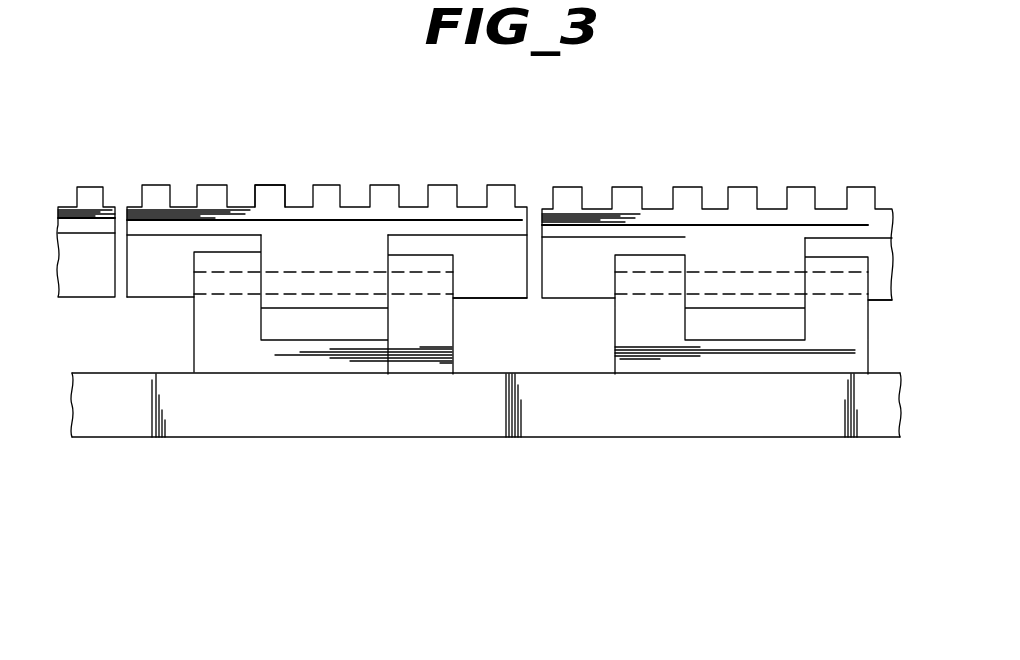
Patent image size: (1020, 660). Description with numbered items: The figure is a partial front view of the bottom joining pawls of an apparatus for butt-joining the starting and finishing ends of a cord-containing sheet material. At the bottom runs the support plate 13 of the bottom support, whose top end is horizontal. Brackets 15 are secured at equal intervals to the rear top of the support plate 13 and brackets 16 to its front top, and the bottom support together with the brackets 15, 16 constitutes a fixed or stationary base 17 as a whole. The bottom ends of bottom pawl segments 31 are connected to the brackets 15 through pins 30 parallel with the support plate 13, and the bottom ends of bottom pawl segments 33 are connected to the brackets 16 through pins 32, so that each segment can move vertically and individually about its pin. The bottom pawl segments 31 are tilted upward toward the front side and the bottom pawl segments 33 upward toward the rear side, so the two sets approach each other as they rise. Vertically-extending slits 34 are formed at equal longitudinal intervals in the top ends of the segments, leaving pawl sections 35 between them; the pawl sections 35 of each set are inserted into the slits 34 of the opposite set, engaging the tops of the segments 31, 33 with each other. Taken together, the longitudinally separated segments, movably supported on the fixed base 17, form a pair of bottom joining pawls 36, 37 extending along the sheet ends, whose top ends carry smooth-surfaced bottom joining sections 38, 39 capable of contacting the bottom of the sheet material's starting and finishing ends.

The support plate 13 is at (486, 436).
The fixed base 17 is at (640, 440).
The brackets 15 is at (464, 347).
The brackets 16 is at (230, 349).
The pins 30 is at (543, 304).
The pins 32 is at (375, 300).
The bottom pawl segments 31 is at (327, 178).
The bottom pawl segments 33 is at (384, 222).
The slits 34 is at (327, 208).
The pawl sections 35 is at (266, 186).
The bottom joining pawl 36 is at (713, 213).
The bottom joining pawl 37 is at (713, 213).
The bottom joining section 38 is at (713, 182).
The bottom joining section 39 is at (568, 204).